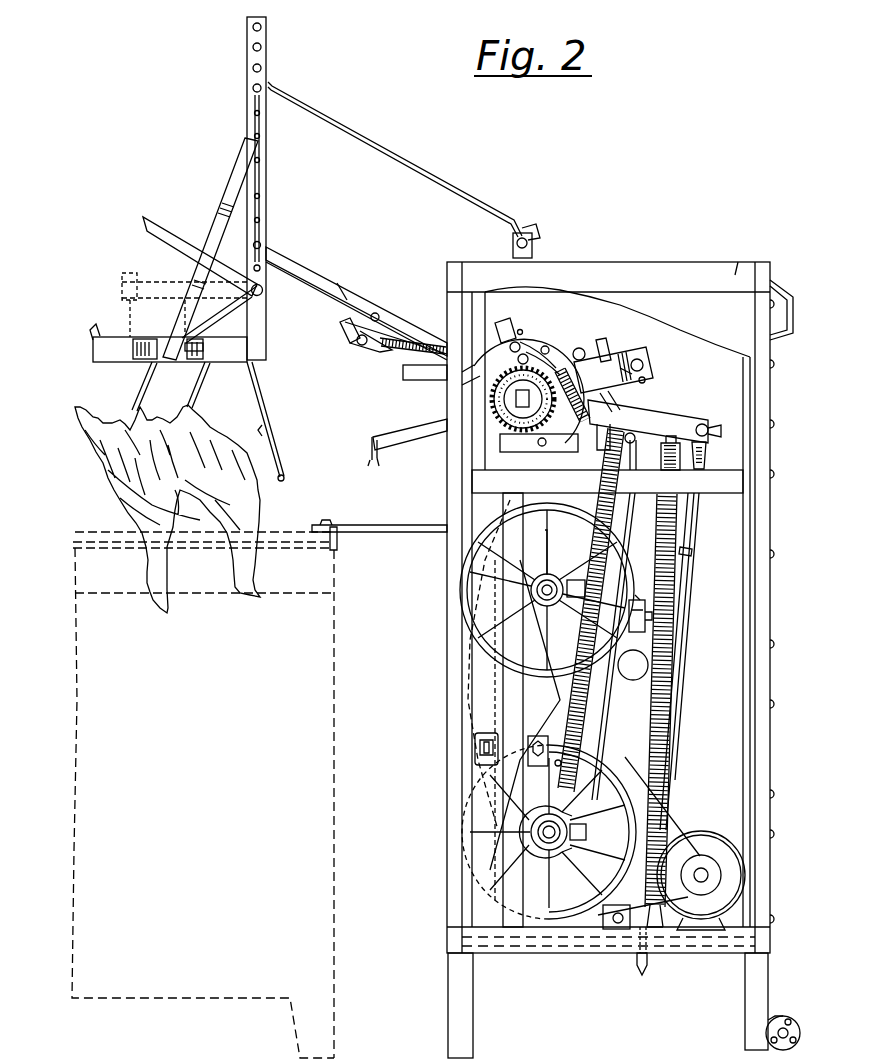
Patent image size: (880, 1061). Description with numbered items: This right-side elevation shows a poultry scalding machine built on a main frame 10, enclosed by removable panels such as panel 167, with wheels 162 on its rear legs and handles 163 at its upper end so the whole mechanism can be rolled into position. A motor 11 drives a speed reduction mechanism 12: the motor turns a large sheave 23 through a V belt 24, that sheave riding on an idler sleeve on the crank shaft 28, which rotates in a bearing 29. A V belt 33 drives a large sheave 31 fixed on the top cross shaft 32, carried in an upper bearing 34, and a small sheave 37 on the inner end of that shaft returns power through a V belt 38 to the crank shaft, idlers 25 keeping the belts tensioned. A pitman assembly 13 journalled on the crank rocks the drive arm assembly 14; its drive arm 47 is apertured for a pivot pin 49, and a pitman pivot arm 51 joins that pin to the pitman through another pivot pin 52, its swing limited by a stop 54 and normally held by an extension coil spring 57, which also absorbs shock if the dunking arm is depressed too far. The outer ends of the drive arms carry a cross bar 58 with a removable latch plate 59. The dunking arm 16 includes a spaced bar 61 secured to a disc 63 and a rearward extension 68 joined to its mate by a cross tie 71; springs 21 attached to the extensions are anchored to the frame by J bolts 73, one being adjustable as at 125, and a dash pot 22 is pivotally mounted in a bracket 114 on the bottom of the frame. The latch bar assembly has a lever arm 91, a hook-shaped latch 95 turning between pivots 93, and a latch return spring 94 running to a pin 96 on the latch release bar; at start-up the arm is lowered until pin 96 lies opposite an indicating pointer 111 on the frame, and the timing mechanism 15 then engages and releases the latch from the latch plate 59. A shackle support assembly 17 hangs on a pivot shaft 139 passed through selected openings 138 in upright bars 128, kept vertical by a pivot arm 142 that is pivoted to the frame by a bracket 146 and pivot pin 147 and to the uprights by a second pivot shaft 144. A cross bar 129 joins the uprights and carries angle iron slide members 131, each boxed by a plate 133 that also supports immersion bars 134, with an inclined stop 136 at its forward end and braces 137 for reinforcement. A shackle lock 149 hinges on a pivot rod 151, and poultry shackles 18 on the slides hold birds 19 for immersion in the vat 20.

The main frame 10 is at (455, 991).
The motor 11 is at (733, 862).
The speed reduction mechanism 12 is at (448, 655).
The pitman assembly 13 is at (555, 335).
The drive arm assembly 14 is at (663, 332).
The timing mechanism 15 is at (490, 397).
The dunking arm 16 is at (342, 254).
The shackle support assembly 17 is at (267, 127).
The poultry shackles 18 is at (125, 272).
The birds 19 is at (120, 505).
The vat 20 is at (250, 810).
The springs 21 is at (672, 717).
The dash pot 22 is at (725, 572).
The large sheave 23 is at (485, 890).
The V belt 24 is at (740, 843).
The idlers 25 is at (475, 745).
The crank shaft 28 is at (525, 825).
The bearing 29 is at (530, 840).
The large sheave 31 is at (485, 515).
The top cross shaft 32 is at (535, 592).
The V belt 33 is at (520, 730).
The upper bearing 34 is at (530, 580).
The small sheave 37 is at (547, 540).
The V belt 38 is at (490, 704).
The drive arm 47 is at (650, 376).
The pivot pin 49 is at (645, 363).
The pitman pivot arm 51 is at (624, 352).
The pivot pin 52 is at (578, 348).
The stop 54 is at (600, 340).
The extension coil spring 57 is at (622, 395).
The cross bar 58 is at (379, 466).
The removable latch plate 59 is at (368, 466).
The bar 61 is at (290, 258).
The disc 63 is at (480, 440).
The rearward extension 68 is at (706, 424).
The cross tie 71 is at (706, 450).
The J bolts 73 is at (636, 968).
The lever arm 91 is at (338, 318).
The pivots 93 is at (372, 312).
The latch return spring 94 is at (415, 336).
The hook-shaped latch 95 is at (352, 338).
The pin 96 is at (398, 330).
The indicating pointer 111 is at (402, 372).
The bracket 114 is at (600, 930).
The spring adjustment 125 is at (634, 440).
The upright bars 128 is at (267, 35).
The cross bar 129 is at (238, 363).
The angle iron slide member 131 is at (100, 363).
The plate 133 is at (200, 340).
The immersion bars 134 is at (272, 440).
The inclined stop 136 is at (104, 308).
The braces 137 is at (245, 158).
The openings 138 is at (267, 62).
The pivot shaft 139 is at (262, 243).
The pivot arm 142 is at (320, 100).
The second pivot shaft 144 is at (250, 85).
The bracket 146 is at (512, 250).
The pivot pin 147 is at (513, 235).
The shackle lock 149 is at (146, 222).
The pivot rod 151 is at (263, 292).
The wheels 162 is at (778, 1015).
The handles 163 is at (793, 312).
The removable panel 167 is at (750, 250).